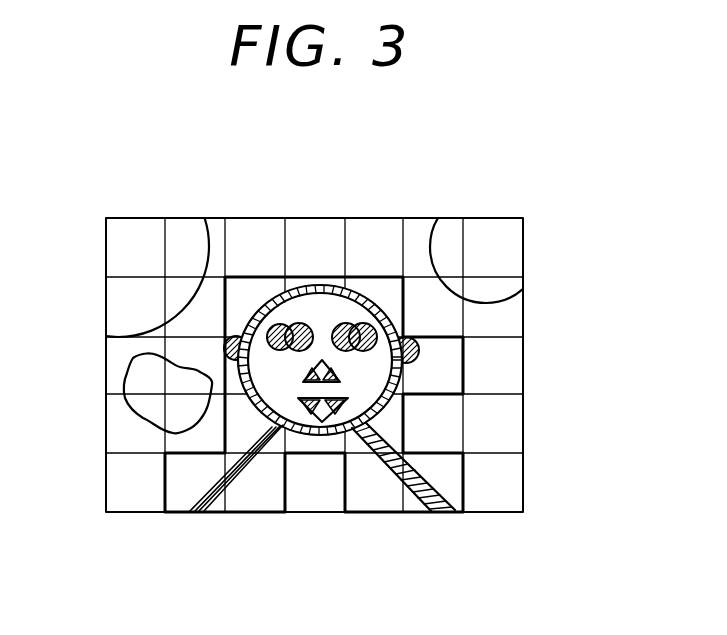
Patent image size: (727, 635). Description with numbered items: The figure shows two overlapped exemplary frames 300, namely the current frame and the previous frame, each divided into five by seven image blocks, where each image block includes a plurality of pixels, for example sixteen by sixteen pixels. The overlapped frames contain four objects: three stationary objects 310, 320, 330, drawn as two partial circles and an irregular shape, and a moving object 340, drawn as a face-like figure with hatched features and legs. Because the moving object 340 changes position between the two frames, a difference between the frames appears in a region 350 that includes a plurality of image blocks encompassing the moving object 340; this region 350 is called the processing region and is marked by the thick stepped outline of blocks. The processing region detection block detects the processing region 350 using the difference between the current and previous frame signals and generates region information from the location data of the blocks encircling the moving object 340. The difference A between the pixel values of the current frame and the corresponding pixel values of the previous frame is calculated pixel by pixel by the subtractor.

The overlapped exemplary frames 300 is at (345, 151).
The stationary object 310 is at (140, 232).
The stationary object 320 is at (484, 230).
The stationary object 330 is at (146, 402).
The moving object 340 is at (367, 373).
The processing region 350 is at (372, 513).
The difference between pixel values A is at (238, 474).